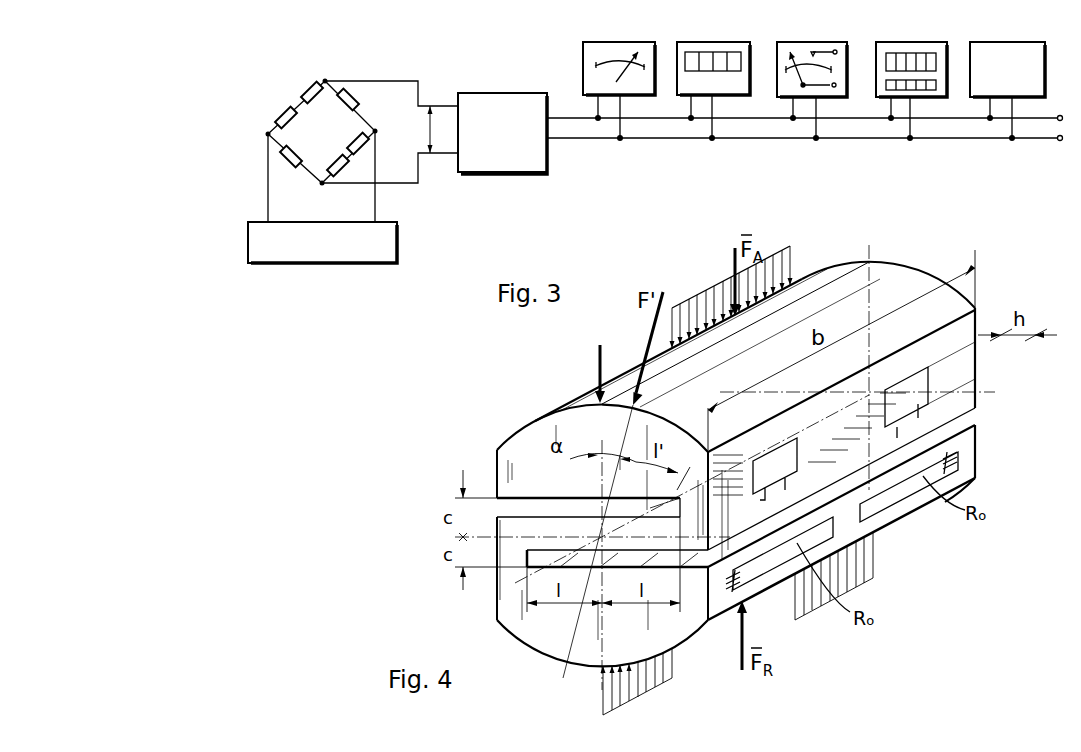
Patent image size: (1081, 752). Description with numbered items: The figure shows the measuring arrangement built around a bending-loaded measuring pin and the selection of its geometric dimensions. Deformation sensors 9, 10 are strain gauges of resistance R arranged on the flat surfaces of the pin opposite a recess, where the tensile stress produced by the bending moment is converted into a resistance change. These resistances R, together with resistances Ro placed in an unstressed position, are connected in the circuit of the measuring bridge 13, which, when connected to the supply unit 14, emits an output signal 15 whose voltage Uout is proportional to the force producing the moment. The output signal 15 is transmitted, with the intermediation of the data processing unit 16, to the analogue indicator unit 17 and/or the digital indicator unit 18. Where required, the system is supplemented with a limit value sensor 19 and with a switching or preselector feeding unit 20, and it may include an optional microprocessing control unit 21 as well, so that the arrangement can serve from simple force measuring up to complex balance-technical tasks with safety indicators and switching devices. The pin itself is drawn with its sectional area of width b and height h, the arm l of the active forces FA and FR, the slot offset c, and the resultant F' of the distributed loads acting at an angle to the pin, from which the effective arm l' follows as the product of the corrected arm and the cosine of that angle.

In FIG. 4, the deformation sensor 9 is at (975, 378).
In FIG. 4, the deformation sensor 10 is at (792, 470).
In FIG. 3, the measuring bridge 13 is at (303, 108).
In FIG. 3, the supply unit 14 is at (380, 237).
In FIG. 3, the output signal 15 is at (430, 122).
In FIG. 3, the data processing unit 16 is at (504, 106).
In FIG. 4, the data processing unit 16 is at (557, 557).
In FIG. 3, the analogue indicator unit 17 is at (613, 52).
In FIG. 3, the digital indicator unit 18 is at (707, 52).
In FIG. 3, the limit value sensor 19 is at (800, 53).
In FIG. 3, the switching or preselector feeding unit 20 is at (922, 55).
In FIG. 3, the microprocessing control unit 21 is at (1008, 55).